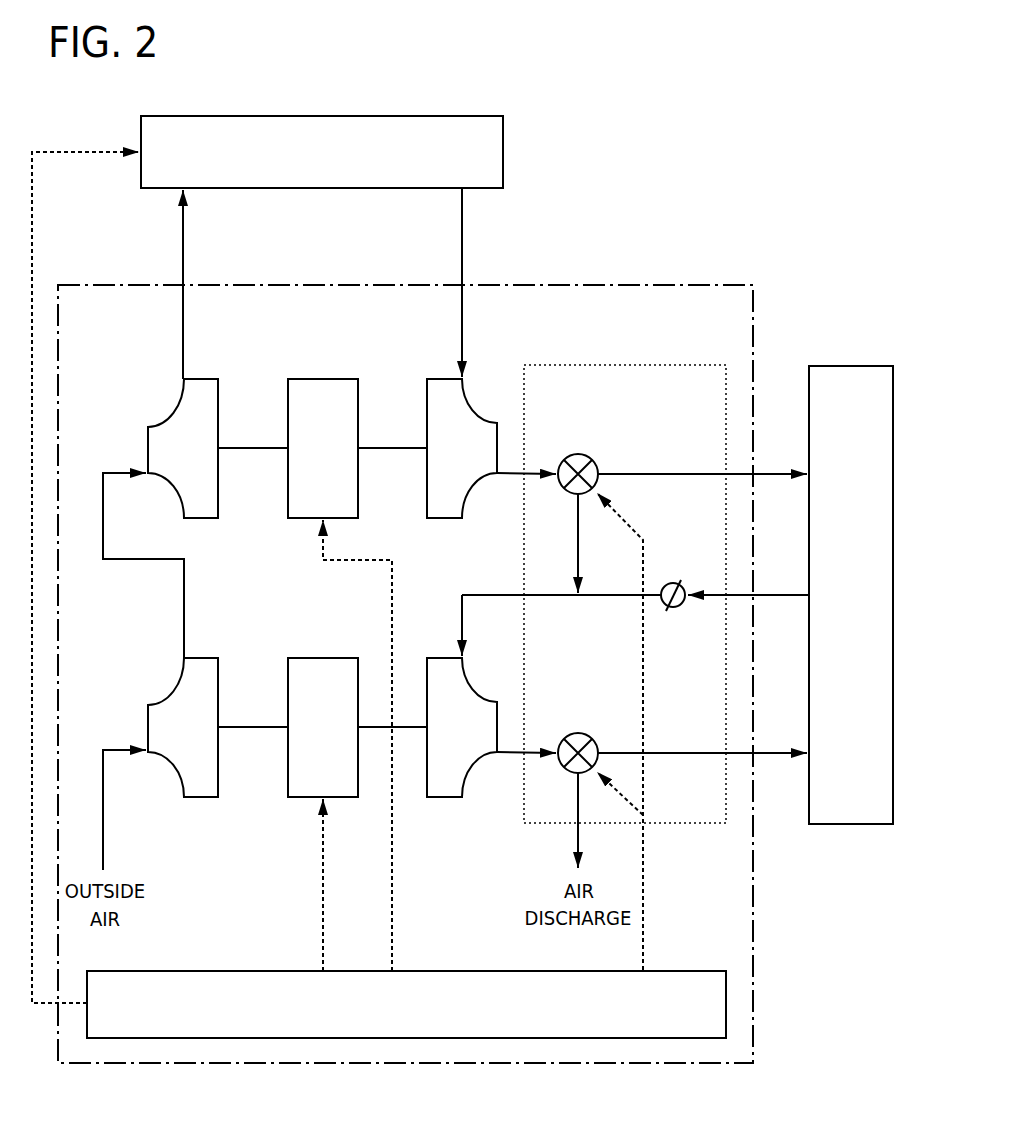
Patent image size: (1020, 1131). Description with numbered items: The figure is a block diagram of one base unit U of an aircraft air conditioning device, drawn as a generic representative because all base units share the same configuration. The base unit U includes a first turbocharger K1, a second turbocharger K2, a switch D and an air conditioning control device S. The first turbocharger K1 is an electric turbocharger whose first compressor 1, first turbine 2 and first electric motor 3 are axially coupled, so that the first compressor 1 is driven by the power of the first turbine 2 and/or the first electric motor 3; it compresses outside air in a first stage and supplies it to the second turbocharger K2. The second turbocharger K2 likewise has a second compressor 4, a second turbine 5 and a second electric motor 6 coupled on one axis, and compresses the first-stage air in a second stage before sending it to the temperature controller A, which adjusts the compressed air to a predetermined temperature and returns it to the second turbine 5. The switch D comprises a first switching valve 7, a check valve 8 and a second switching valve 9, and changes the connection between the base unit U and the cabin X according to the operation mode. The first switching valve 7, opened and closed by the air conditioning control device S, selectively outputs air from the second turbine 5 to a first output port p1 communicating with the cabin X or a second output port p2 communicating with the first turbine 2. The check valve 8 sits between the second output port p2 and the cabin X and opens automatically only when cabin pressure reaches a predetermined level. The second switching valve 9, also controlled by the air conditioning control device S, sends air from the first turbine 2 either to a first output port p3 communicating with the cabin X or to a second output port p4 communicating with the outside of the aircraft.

The temperature controller A is at (368, 115).
The base unit U is at (706, 285).
The first turbocharger K1 is at (156, 658).
The second turbocharger K2 is at (156, 380).
The first compressor 1 is at (201, 657).
The first turbine 2 is at (438, 657).
The first electric motor 3 is at (320, 657).
The second compressor 4 is at (201, 379).
The second turbine 5 is at (438, 379).
The second electric motor 6 is at (320, 379).
The first switching valve 7 is at (578, 454).
The check valve 8 is at (673, 583).
The second switching valve 9 is at (578, 733).
The first output port p1 is at (702, 458).
The second output port p2 is at (560, 543).
The first output port p3 is at (702, 738).
The second output port p4 is at (560, 820).
The switch D is at (681, 364).
The cabin X is at (845, 366).
The air conditioning control device S is at (678, 971).